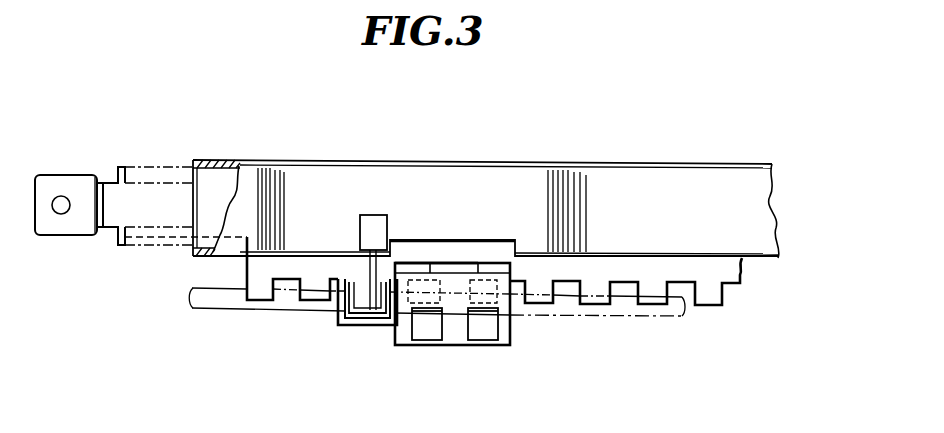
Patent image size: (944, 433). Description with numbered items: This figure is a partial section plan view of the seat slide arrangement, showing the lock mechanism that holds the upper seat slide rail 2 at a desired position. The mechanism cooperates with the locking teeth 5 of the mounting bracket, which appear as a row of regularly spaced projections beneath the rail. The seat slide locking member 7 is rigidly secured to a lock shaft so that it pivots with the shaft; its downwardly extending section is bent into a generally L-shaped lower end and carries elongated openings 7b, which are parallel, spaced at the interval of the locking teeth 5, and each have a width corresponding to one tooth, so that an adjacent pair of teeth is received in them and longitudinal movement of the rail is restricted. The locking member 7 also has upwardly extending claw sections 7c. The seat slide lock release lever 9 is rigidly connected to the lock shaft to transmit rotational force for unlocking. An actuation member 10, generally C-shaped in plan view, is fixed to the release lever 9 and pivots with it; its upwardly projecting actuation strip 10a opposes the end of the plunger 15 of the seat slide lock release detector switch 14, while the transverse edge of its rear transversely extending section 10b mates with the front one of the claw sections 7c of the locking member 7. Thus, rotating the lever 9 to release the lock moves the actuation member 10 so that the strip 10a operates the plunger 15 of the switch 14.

The upper seat slide rail 2 is at (675, 175).
The locking teeth 5 is at (265, 302).
The seat slide locking member 7 is at (467, 265).
The elongated openings 7b is at (427, 330).
The upwardly extending claw sections 7c is at (417, 265).
The seat slide lock release lever 9 is at (217, 304).
The actuation member 10 is at (347, 328).
The actuation strip 10a is at (378, 328).
The rear transversely extending section 10b is at (400, 265).
The seat slide lock release detector switch 14 is at (365, 214).
The plunger 15 is at (363, 270).